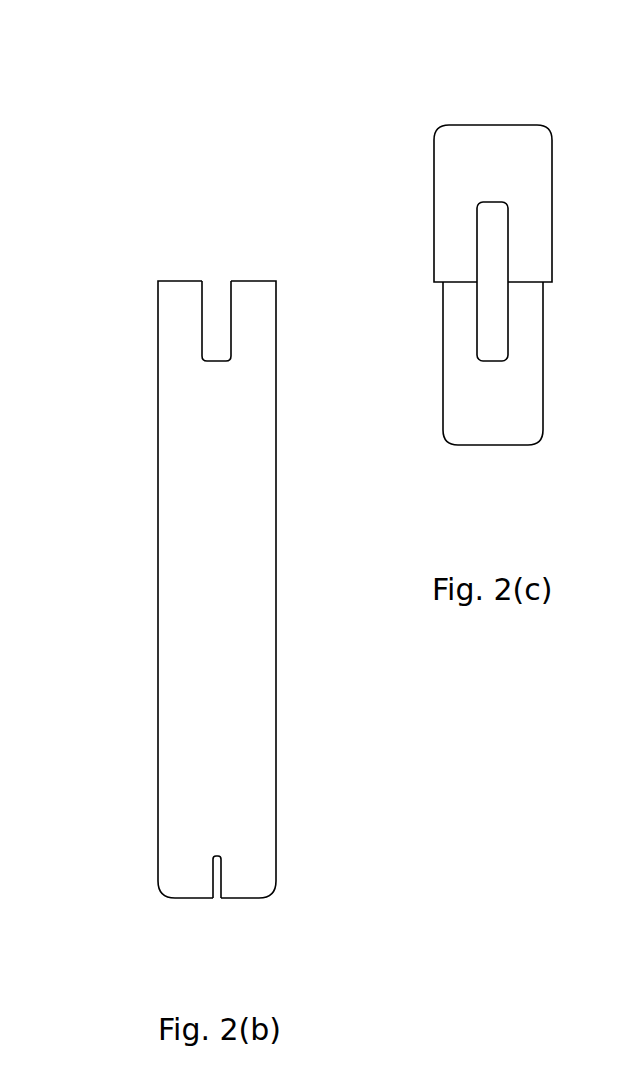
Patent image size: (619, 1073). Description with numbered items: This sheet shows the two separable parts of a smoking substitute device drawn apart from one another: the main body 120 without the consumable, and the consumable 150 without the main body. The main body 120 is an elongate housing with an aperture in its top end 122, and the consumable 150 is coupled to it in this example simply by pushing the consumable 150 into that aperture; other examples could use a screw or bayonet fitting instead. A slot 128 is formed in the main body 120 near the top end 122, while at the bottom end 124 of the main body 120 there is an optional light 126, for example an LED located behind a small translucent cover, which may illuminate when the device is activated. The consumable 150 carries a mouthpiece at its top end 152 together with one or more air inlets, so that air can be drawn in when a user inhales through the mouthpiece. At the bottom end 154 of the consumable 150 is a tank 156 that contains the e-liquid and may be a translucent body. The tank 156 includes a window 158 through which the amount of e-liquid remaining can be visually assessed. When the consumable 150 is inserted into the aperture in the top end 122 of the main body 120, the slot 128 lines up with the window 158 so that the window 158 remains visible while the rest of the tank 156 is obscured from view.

In FIG. 2B, the main body 120 is at (176, 577).
In FIG. 2B, the top end 122 is at (168, 269).
In FIG. 2B, the bottom end 124 is at (237, 905).
In FIG. 2B, the light 126 is at (212, 880).
In FIG. 2B, the slot 128 is at (215, 318).
In FIG. 2C, the consumable 150 is at (444, 273).
In FIG. 2C, the top end 152 is at (503, 117).
In FIG. 2C, the bottom end 154 is at (505, 453).
In FIG. 2C, the tank 156 is at (469, 402).
In FIG. 2C, the window 158 is at (498, 260).